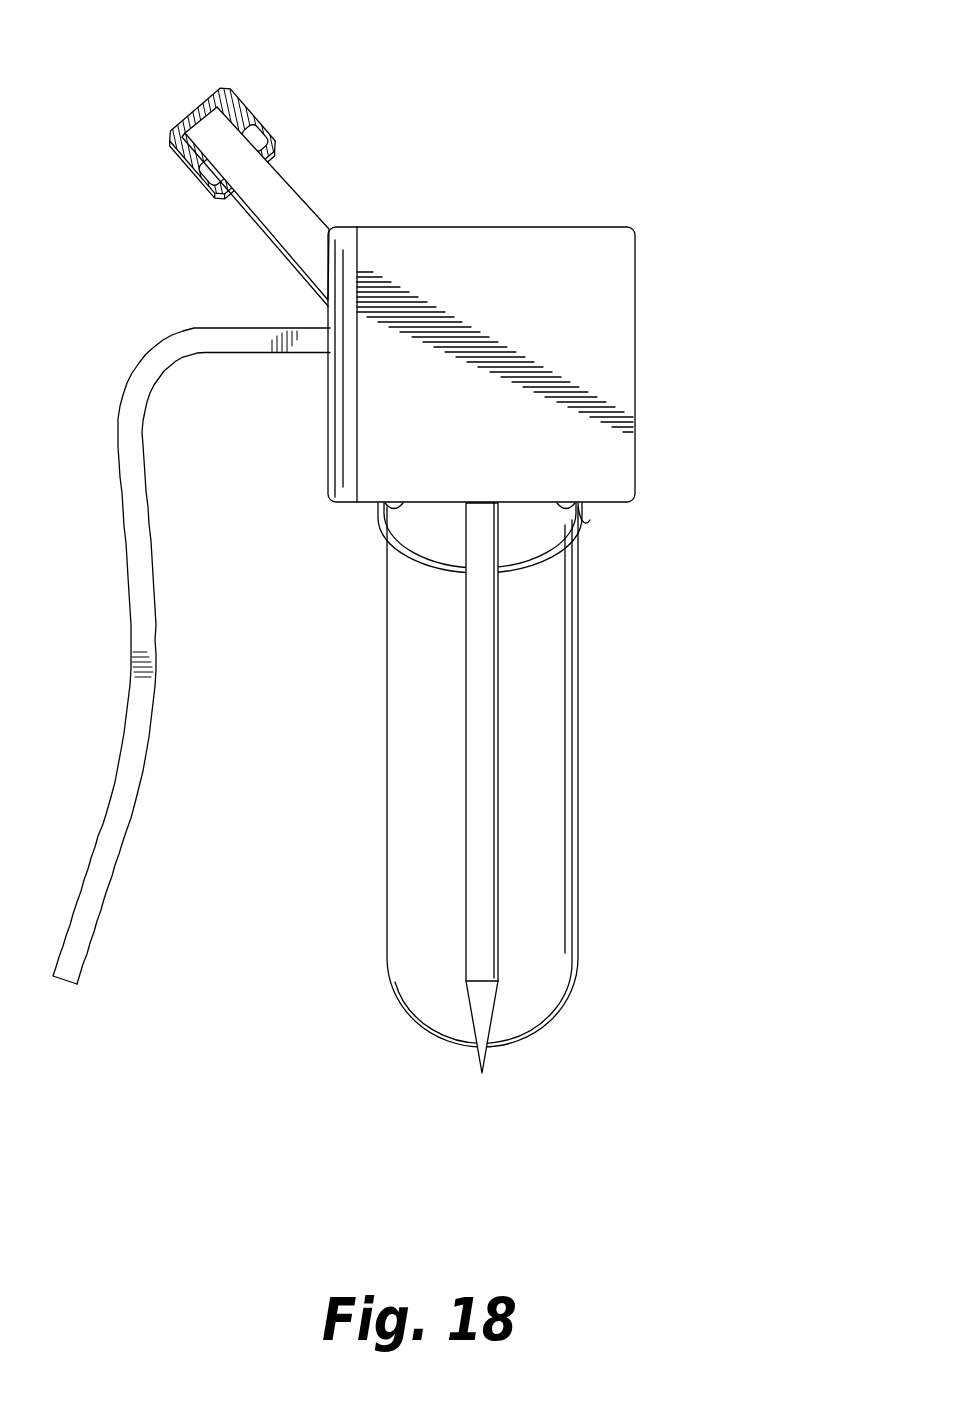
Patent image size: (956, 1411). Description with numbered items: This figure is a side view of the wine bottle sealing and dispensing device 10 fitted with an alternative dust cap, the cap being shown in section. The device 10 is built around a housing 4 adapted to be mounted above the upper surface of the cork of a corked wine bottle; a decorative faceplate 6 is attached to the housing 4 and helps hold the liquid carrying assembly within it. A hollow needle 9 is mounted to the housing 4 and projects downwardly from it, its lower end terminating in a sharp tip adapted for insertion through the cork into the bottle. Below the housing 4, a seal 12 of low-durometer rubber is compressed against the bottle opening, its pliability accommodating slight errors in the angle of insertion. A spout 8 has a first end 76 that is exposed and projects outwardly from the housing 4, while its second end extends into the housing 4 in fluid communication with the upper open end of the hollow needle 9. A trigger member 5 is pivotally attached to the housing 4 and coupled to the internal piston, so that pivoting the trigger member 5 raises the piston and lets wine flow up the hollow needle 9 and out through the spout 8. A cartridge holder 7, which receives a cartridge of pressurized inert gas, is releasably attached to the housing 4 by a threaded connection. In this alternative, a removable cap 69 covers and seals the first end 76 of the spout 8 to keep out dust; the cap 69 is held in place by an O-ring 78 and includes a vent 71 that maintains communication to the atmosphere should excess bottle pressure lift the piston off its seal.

The wine bottle sealing and dispensing device 10 is at (702, 251).
The housing 4 is at (634, 418).
The trigger member 5 is at (130, 578).
The faceplate 6 is at (328, 467).
The cartridge holder 7 is at (580, 900).
The spout 8 is at (263, 222).
The hollow needle 9 is at (503, 787).
The seal 12 is at (580, 515).
The removable cap 69 is at (258, 112).
The vent 71 is at (174, 153).
The first end of the spout 76 is at (187, 112).
The O-ring 78 is at (196, 180).